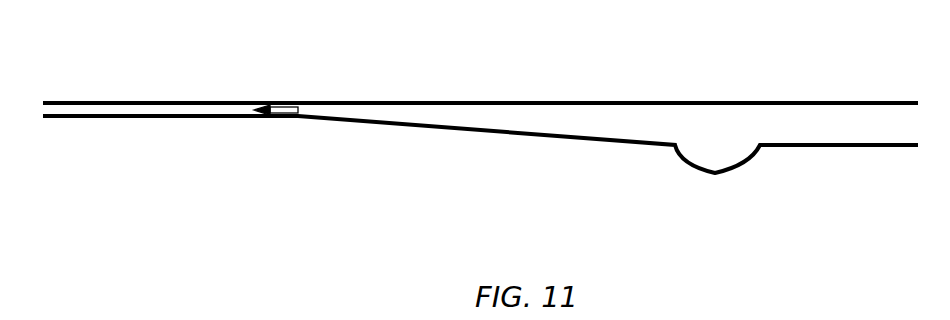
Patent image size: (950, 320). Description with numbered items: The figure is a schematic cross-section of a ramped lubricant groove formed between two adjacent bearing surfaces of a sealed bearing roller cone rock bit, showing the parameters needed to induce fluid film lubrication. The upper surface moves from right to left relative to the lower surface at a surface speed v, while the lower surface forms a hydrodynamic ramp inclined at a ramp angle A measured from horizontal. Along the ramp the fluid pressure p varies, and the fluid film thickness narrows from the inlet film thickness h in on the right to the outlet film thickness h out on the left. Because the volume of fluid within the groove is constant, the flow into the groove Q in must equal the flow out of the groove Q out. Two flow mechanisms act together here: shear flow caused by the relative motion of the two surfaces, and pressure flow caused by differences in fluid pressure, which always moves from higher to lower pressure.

The ramp angle A is at (569, 100).
The pressure p is at (561, 188).
The fluid film thickness at outlet h out is at (227, 170).
The fluid film thickness at inlet h in is at (677, 195).
The fluid flow rate at outlet Q out is at (278, 101).
The fluid flow rate at inlet Q in is at (681, 125).
The surface speed v is at (726, 76).